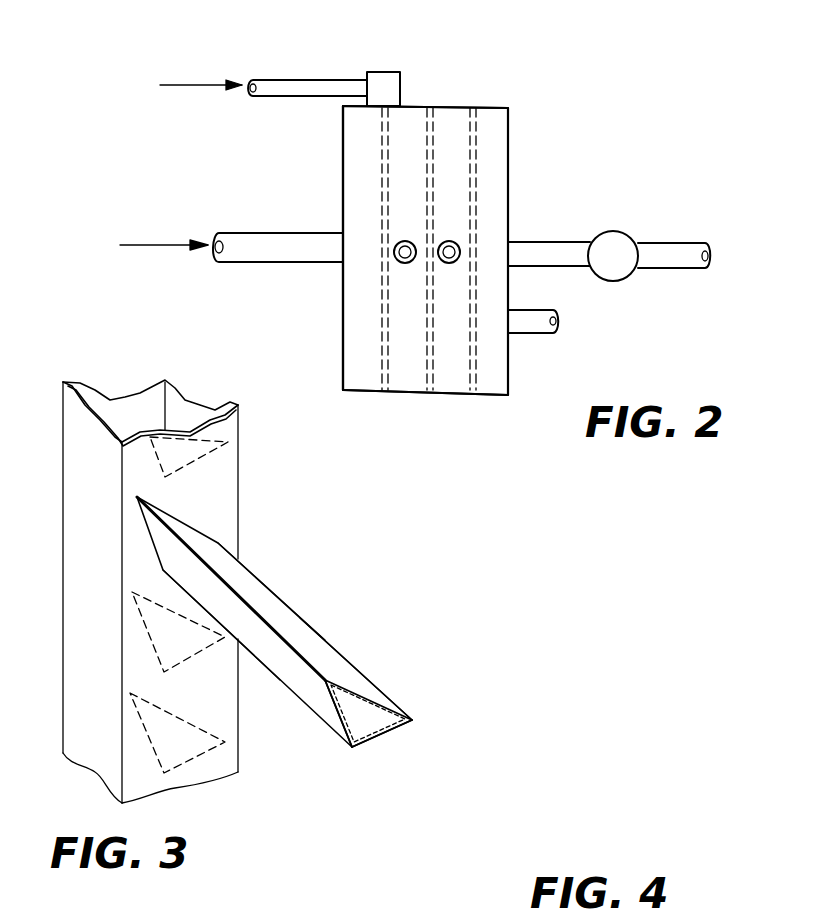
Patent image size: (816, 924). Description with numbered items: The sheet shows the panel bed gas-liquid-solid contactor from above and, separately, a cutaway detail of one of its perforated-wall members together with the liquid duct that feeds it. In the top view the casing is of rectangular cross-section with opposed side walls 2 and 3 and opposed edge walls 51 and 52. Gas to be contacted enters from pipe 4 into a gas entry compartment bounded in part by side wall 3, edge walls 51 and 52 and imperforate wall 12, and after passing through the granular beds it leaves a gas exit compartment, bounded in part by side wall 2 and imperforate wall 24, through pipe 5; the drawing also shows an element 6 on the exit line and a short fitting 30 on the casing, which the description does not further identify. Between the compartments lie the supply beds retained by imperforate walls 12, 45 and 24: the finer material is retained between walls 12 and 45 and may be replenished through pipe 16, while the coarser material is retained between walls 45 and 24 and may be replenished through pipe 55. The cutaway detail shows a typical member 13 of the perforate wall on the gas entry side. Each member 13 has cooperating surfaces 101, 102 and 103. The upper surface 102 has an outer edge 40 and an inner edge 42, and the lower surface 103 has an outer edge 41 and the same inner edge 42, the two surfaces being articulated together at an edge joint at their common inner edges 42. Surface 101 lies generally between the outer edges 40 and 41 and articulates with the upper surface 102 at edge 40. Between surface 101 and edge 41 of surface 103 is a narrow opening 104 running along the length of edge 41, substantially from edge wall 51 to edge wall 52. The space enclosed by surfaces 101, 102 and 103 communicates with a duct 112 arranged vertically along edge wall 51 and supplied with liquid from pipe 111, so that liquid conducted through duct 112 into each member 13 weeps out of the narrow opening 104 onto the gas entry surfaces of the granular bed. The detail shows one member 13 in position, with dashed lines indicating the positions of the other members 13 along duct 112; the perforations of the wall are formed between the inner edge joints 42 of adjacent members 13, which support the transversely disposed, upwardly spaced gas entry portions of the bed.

In FIG. 2, the side wall 2 is at (508, 372).
In FIG. 2, the side wall 3 is at (343, 324).
In FIG. 2, the pipe 4 is at (280, 233).
In FIG. 2, the pipe 5 is at (562, 242).
In FIG. 2, the voltmeter 6 is at (626, 238).
In FIG. 2, the imperforate wall 12 is at (382, 147).
In FIG. 3, the member 13 is at (392, 689).
In FIG. 2, the pipe 16 is at (407, 264).
In FIG. 2, the imperforate wall 24 is at (477, 157).
In FIG. 2, the drain tube 30 is at (550, 337).
In FIG. 3, the outer edge 40 is at (245, 598).
In FIG. 3, the outer edge 41 is at (365, 753).
In FIG. 3, the inner edge 42 is at (340, 653).
In FIG. 2, the imperforate wall 45 is at (434, 128).
In FIG. 2, the edge wall 51 is at (492, 107).
In FIG. 2, the edge wall 52 is at (400, 395).
In FIG. 2, the pipe 55 is at (452, 264).
In FIG. 3, the surface 101 is at (290, 662).
In FIG. 3, the upper surface 102 is at (270, 602).
In FIG. 3, the lower surface 103 is at (395, 735).
In FIG. 3, the narrow opening 104 is at (362, 752).
In FIG. 2, the pipe 111 is at (315, 80).
In FIG. 2, the duct 112 is at (390, 72).
In FIG. 3, the duct 112 is at (80, 596).